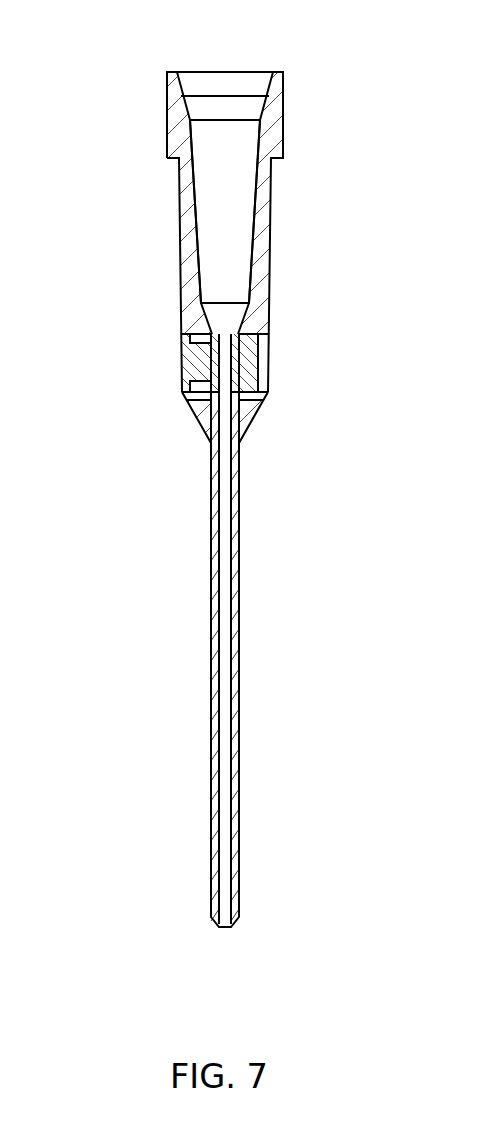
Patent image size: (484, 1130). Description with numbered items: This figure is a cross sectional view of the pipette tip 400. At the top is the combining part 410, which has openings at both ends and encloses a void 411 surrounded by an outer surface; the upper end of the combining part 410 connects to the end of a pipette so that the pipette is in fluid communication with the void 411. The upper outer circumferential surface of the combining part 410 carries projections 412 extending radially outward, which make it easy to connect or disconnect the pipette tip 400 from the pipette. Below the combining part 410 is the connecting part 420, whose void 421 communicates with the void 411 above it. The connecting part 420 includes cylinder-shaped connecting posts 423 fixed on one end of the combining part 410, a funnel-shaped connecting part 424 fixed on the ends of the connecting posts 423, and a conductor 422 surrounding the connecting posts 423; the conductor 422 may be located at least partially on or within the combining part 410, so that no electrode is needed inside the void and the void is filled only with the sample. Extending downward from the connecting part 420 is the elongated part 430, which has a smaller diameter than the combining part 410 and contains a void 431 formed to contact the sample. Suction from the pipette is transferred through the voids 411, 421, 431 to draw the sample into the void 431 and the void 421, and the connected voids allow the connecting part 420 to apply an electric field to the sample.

The pipette tip 400 is at (338, 120).
The combining part 410 is at (262, 227).
The void 411 is at (224, 236).
The projections 412 is at (177, 140).
The connecting part 420 is at (242, 565).
The void 421 is at (226, 373).
The conductor 422 is at (190, 354).
The connecting posts 423 is at (238, 343).
The funnel-shaped connecting part 424 is at (203, 410).
The elongated part 430 is at (234, 620).
The void 431 is at (224, 672).